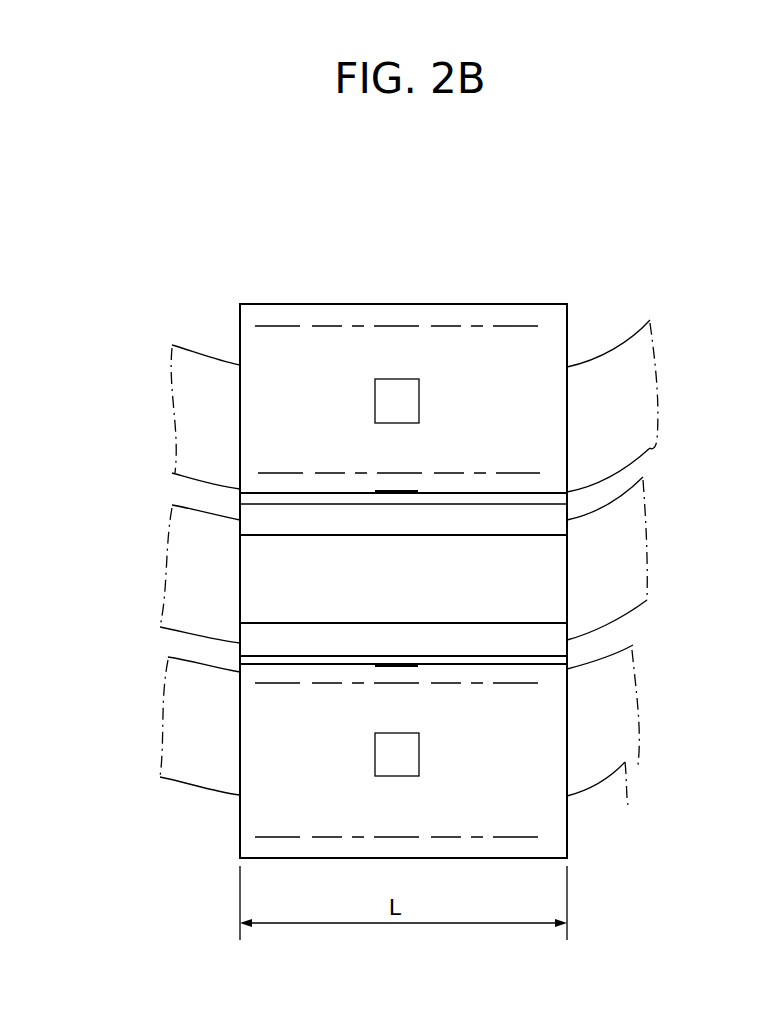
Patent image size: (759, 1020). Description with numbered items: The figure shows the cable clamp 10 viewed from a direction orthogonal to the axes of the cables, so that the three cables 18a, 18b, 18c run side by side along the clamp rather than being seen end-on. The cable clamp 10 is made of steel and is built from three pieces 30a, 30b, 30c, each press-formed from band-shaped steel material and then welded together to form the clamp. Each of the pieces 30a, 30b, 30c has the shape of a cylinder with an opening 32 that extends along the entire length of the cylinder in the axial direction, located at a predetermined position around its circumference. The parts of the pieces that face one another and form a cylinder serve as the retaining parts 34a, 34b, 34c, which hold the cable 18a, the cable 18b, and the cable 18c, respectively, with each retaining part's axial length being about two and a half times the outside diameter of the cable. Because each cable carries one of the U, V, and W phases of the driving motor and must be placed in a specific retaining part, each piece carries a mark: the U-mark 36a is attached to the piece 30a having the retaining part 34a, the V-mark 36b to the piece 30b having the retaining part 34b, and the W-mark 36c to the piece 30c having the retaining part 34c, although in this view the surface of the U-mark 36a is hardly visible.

The cable clamp 10 is at (505, 257).
The piece 30c is at (262, 346).
The piece 30a is at (258, 644).
The piece 30b is at (254, 848).
The opening 32 is at (520, 615).
The retaining part 34a is at (265, 548).
The retaining part 34b is at (256, 806).
The retaining part 34c is at (256, 406).
The U-mark 36a is at (418, 492).
The V-mark 36b is at (412, 768).
The W-mark 36c is at (413, 384).
The cable 18a is at (643, 636).
The cable 18b is at (628, 805).
The cable 18c is at (650, 450).